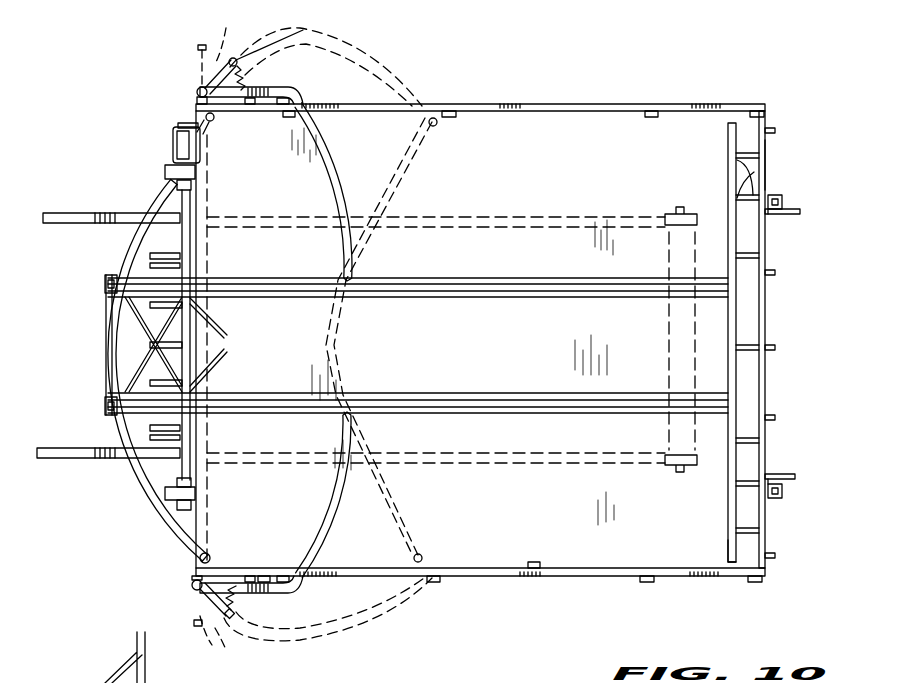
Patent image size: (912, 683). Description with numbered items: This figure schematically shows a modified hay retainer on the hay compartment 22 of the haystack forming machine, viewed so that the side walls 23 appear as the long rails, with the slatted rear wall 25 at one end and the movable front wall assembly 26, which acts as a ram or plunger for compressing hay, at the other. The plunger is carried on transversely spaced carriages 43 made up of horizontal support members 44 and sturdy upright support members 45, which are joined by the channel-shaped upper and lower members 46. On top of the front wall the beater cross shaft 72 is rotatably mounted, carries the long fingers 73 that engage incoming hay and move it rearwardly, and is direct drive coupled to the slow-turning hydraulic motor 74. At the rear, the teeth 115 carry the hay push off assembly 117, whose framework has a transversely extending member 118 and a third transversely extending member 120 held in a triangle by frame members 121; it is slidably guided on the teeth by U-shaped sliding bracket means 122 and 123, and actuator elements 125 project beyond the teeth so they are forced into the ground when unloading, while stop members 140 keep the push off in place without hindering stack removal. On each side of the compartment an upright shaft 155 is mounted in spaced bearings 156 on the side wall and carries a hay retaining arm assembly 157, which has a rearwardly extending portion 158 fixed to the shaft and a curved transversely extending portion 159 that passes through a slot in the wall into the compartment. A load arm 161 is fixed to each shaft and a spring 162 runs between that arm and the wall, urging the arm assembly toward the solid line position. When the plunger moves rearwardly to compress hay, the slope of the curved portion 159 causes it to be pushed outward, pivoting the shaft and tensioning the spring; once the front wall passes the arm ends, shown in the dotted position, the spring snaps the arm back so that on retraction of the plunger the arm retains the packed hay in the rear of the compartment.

The hay compartment 22 is at (739, 304).
The side walls 23 is at (597, 104).
The slatted rear wall 25 is at (778, 165).
The movable front wall assembly 26 is at (150, 488).
The carriages 43 is at (162, 262).
The horizontal support members 44 is at (229, 280).
The upright support members 45 is at (108, 282).
The upper and lower members 46 is at (110, 675).
The cross shaft 72 is at (194, 198).
The fingers 73 is at (162, 214).
The hydraulic motor 74 is at (172, 138).
The teeth 115 is at (775, 347).
The hay push off assembly 117 is at (724, 531).
The transversely extending member 118 is at (742, 339).
The third transversely extending member 120 is at (730, 510).
The frame members 121 is at (747, 196).
The sliding bracket means 122 is at (784, 490).
The sliding bracket means 123 is at (784, 200).
The actuator elements 125 is at (795, 215).
The stop members 140 is at (777, 194).
The upright shaft 155 is at (192, 585).
The bearings 156 is at (198, 90).
The hay retaining arm assembly 157 is at (322, 177).
The rearwardly extending portion 158 is at (264, 90).
The curved transversely extending portion 159 is at (374, 64).
The load arm 161 is at (223, 40).
The spring 162 is at (304, 30).